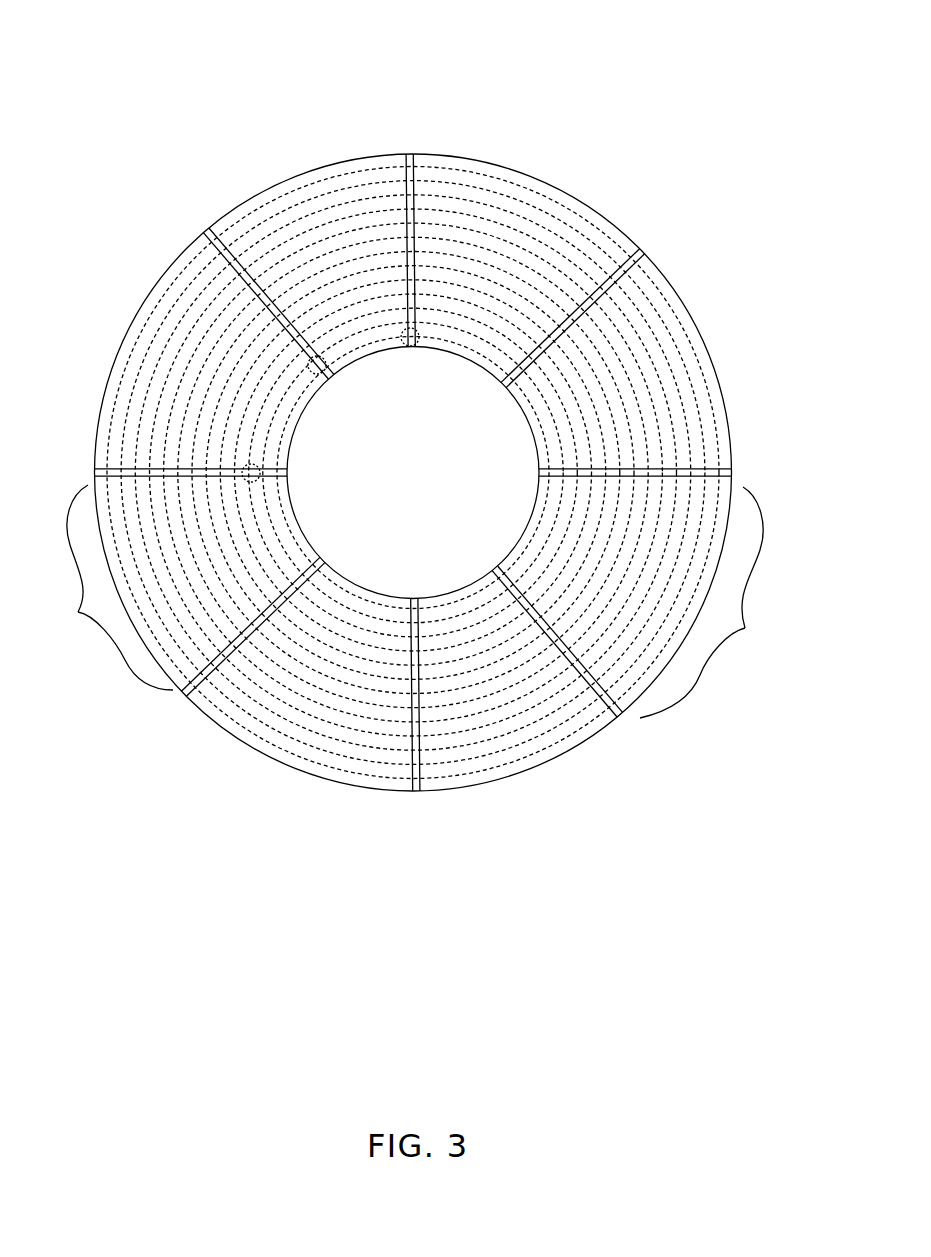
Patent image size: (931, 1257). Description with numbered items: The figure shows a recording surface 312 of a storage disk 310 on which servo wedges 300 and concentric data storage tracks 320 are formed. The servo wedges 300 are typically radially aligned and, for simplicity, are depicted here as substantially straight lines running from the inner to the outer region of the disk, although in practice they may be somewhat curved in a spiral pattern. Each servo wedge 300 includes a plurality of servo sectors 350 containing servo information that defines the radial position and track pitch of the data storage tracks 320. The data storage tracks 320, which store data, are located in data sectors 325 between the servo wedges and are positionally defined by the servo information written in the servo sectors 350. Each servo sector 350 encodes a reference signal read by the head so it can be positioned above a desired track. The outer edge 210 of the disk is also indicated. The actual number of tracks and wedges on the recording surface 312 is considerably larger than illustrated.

The storage disk 310 is at (121, 55).
The servo wedge 300 is at (409, 118).
The outer edge of disk 210 is at (194, 247).
The recording surface 312 is at (212, 409).
The data storage track 320 is at (668, 297).
The servo sector 350 is at (415, 347).
The data sector 325 is at (78, 612).